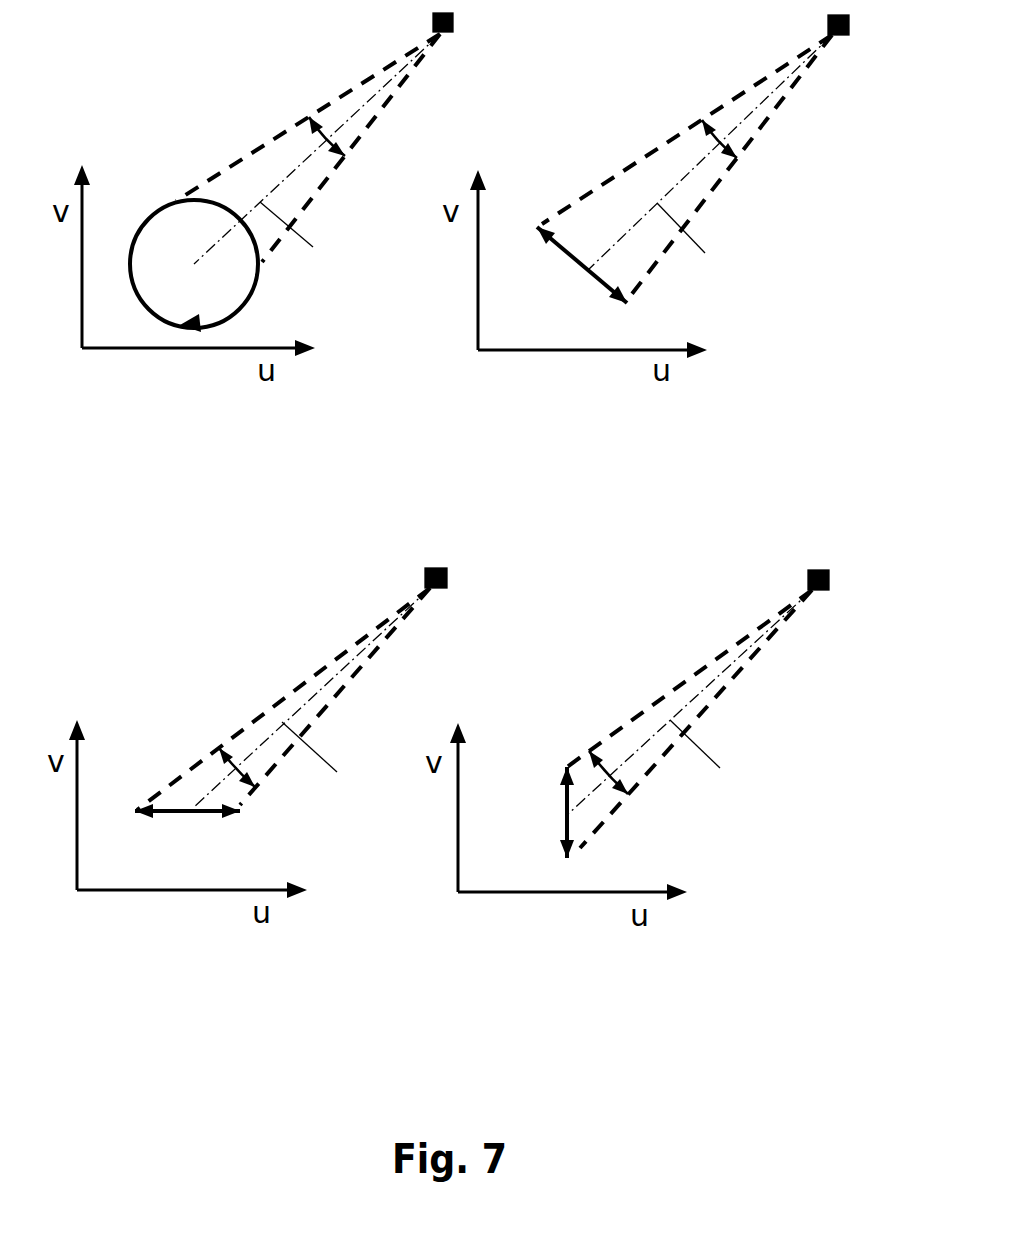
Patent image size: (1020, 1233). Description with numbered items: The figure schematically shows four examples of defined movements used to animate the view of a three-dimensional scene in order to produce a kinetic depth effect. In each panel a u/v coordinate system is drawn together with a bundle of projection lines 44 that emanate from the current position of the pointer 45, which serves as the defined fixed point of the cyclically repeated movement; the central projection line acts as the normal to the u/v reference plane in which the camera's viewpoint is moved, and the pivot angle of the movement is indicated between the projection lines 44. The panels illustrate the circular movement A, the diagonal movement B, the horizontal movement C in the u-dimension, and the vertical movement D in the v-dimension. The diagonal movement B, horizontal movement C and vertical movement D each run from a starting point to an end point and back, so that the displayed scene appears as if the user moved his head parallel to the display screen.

The projection lines 44 is at (266, 140).
The pointer 45 is at (447, 32).
The circular movement A is at (143, 308).
The diagonal movement B is at (565, 257).
The horizontal movement C is at (173, 813).
The vertical movement D is at (562, 820).